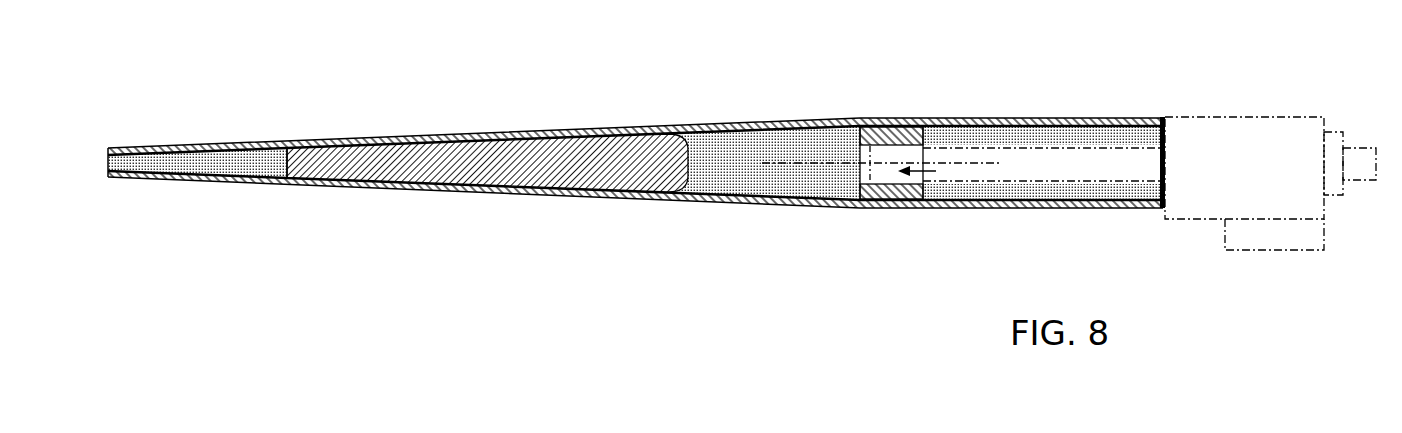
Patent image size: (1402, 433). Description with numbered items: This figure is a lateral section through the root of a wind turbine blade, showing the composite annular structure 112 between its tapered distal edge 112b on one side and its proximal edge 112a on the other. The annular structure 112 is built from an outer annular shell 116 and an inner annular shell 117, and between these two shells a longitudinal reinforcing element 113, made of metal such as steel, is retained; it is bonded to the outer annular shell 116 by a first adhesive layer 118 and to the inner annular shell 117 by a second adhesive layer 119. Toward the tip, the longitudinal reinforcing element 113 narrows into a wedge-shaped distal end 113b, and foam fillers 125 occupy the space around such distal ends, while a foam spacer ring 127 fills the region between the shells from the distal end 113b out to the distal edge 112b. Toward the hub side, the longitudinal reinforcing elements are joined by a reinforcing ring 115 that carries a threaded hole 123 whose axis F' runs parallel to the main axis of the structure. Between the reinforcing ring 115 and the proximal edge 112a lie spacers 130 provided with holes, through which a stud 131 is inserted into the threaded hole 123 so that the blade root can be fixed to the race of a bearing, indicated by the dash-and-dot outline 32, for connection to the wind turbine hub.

The handle/actuator body 32 is at (1270, 165).
The annular structure 112 is at (676, 146).
The proximal edge 112a is at (1172, 158).
The distal edge 112b is at (103, 156).
The longitudinal reinforcing element 113 is at (487, 115).
The distal end 113b is at (333, 159).
The reinforcing ring 115 is at (875, 130).
The outer annular shell 116 is at (688, 123).
The inner annular shell 117 is at (635, 224).
The first adhesive layer 118 is at (635, 83).
The second adhesive layer 119 is at (592, 193).
The threaded hole 123 is at (936, 171).
The filler 125 is at (737, 152).
The spacer ring 127 is at (240, 155).
The spacer 130 is at (1067, 130).
The stud 131 is at (1128, 167).
The axis of threaded hole F' is at (881, 225).